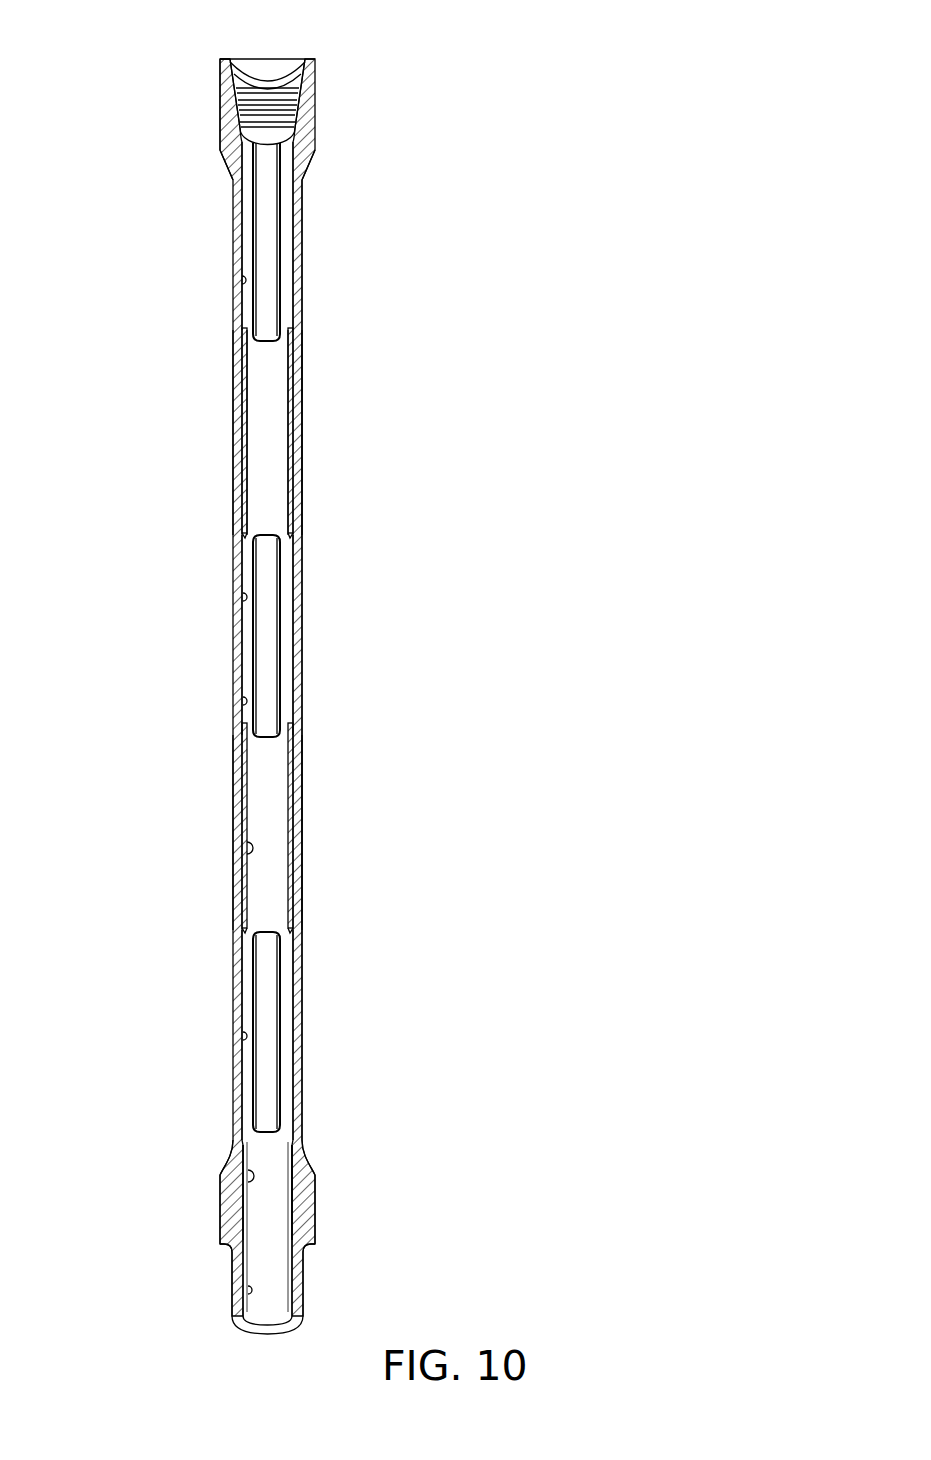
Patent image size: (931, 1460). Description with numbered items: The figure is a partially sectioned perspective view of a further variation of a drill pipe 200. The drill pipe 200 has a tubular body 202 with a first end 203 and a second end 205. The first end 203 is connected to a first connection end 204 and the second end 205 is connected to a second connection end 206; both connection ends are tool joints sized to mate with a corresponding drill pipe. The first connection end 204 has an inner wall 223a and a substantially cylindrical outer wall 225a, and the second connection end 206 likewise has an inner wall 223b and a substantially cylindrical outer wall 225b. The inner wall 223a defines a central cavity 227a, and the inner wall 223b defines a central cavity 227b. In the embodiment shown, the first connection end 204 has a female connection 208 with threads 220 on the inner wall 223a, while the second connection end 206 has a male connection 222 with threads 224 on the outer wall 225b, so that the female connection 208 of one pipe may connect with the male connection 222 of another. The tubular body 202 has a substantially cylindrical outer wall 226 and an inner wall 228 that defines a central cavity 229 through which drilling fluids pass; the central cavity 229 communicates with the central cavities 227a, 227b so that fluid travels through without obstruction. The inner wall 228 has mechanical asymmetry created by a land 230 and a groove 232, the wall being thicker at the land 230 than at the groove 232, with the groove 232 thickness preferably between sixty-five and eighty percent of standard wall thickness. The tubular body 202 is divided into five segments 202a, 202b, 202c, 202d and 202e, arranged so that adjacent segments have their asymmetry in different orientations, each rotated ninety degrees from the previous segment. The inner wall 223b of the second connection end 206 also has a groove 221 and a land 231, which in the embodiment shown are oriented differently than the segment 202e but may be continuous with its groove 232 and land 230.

The drill pipe 200 is at (538, 92).
The tubular body 202 is at (300, 475).
The tubular body segment 202a is at (233, 233).
The tubular body segment 202b is at (235, 390).
The tubular body segment 202c is at (298, 578).
The tubular body segment 202d is at (232, 800).
The tubular body segment 202e is at (233, 978).
The first end 203 is at (303, 180).
The first connection end 204 is at (221, 97).
The second end 205 is at (305, 1137).
The second connection end 206 is at (312, 1233).
The female connection 208 is at (219, 88).
The threads 220 is at (313, 113).
The groove 221 is at (268, 1233).
The male connection 222 is at (298, 1292).
The inner wall 223a is at (247, 70).
The inner wall 223b is at (250, 1180).
The threads 224 is at (300, 1277).
The outer wall 225a is at (315, 122).
The outer wall 225b is at (308, 1182).
The outer wall 226 is at (300, 430).
The central cavity 227a is at (268, 95).
The central cavity 227b is at (262, 1312).
The inner wall 228 is at (243, 597).
The central cavity 229 is at (265, 423).
The land 230 is at (265, 312).
The land 231 is at (250, 1300).
The groove 232 is at (238, 283).